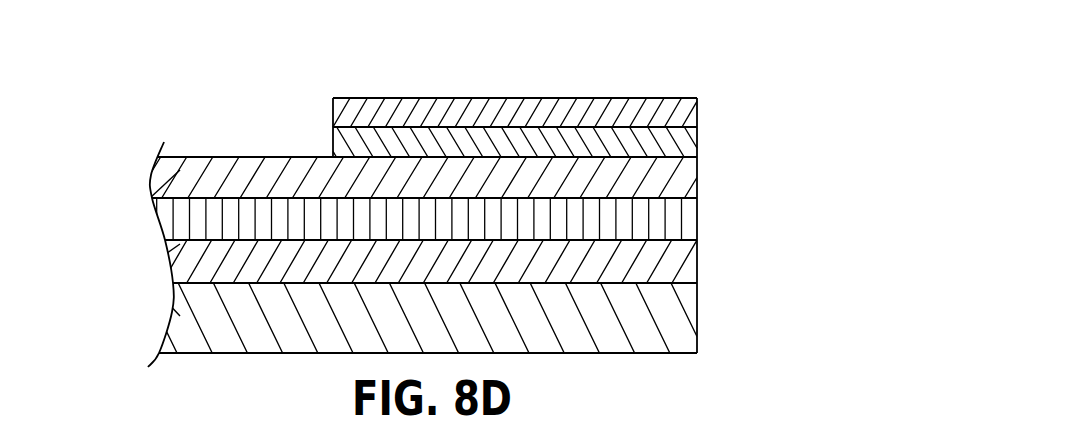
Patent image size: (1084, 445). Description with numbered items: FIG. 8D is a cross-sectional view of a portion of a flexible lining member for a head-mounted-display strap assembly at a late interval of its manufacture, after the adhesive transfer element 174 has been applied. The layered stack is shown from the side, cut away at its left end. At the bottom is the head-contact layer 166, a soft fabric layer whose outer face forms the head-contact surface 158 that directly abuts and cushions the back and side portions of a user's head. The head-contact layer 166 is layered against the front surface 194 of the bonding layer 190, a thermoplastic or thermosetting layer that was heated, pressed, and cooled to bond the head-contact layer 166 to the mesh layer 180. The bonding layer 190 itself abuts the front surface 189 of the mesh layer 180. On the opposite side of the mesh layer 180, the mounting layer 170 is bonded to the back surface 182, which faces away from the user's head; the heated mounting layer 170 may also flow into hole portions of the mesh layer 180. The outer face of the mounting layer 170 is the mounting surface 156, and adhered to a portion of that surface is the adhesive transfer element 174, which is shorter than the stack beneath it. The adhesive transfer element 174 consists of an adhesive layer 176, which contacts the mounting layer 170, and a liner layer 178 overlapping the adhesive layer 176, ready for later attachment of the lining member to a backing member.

The liner layer 178 is at (687, 112).
The adhesive layer 176 is at (686, 142).
The adhesive transfer element 174 is at (332, 112).
The mounting surface 156 is at (223, 157).
The mounting layer 170 is at (686, 182).
The back surface 182 is at (178, 197).
The mesh layer 180 is at (685, 218).
The bonding layer 190 is at (685, 265).
The front surface 189 is at (170, 250).
The head-contact layer 166 is at (685, 320).
The front surface 194 is at (168, 308).
The head-contact surface 158 is at (622, 353).